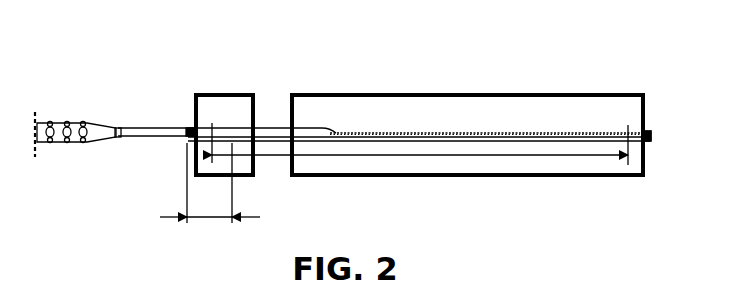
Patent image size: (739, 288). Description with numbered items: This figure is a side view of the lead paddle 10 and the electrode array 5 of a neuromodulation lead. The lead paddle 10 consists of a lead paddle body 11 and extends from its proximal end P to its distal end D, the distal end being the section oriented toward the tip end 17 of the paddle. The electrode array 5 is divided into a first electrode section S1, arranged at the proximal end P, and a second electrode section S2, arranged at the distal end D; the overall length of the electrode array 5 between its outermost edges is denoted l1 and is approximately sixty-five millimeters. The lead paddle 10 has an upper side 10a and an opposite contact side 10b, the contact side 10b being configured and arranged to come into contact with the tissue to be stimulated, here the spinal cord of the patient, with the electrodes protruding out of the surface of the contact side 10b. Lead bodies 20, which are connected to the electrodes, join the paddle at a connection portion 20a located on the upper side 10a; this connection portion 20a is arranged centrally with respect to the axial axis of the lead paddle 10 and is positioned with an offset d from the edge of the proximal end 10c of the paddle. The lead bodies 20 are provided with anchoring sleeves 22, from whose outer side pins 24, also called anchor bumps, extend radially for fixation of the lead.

The electrode array 5 is at (541, 197).
The lead paddle 10 is at (480, 80).
The upper side 10a is at (420, 122).
The contact side 10b is at (452, 155).
The proximal end 10c is at (185, 145).
The lead paddle body 11 is at (349, 131).
The tip end 17 is at (655, 143).
The lead bodies 20 is at (143, 127).
The connection portion 20a is at (267, 127).
The anchoring sleeves 22 is at (97, 145).
The pins 24 is at (83, 121).
The first electrode section S1 is at (211, 122).
The second electrode section S2 is at (625, 110).
The distal end D is at (655, 133).
The proximal end P is at (185, 140).
The offset d is at (217, 185).
The length of the electrode array l1 is at (588, 165).